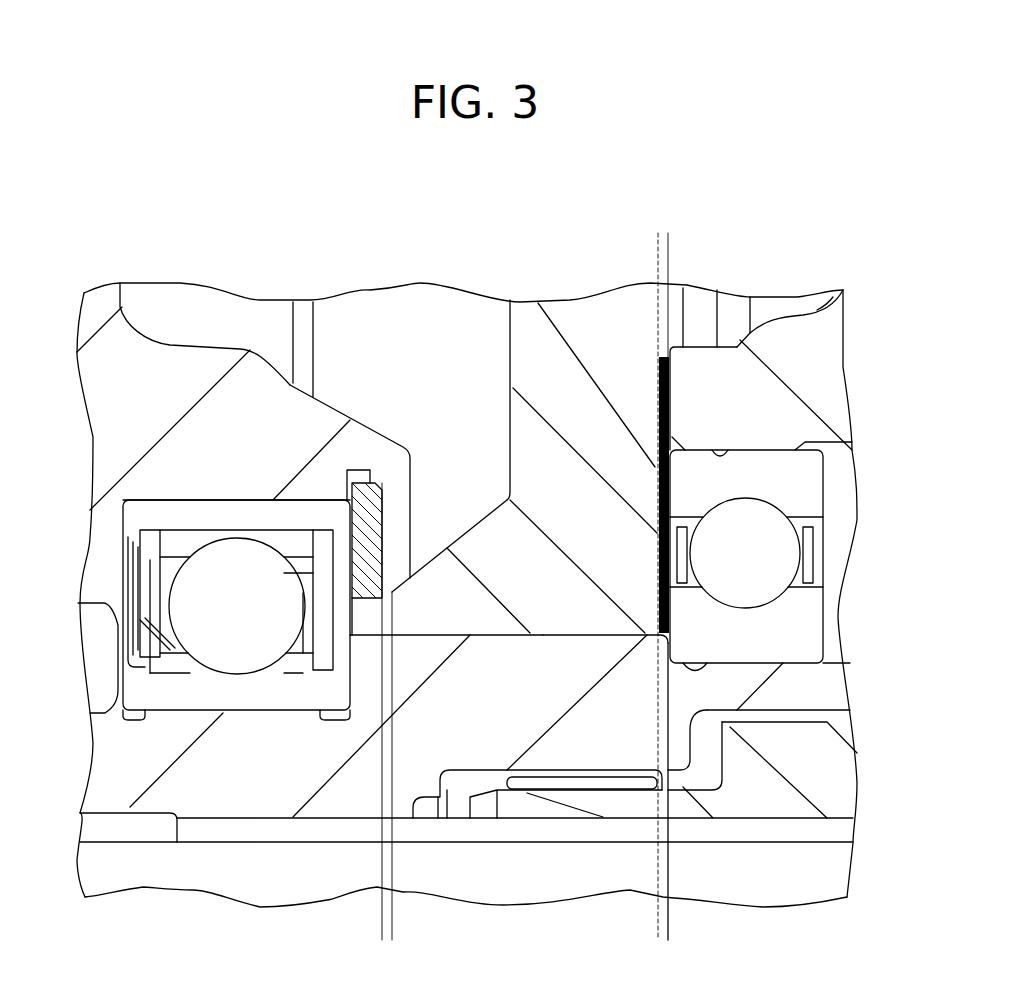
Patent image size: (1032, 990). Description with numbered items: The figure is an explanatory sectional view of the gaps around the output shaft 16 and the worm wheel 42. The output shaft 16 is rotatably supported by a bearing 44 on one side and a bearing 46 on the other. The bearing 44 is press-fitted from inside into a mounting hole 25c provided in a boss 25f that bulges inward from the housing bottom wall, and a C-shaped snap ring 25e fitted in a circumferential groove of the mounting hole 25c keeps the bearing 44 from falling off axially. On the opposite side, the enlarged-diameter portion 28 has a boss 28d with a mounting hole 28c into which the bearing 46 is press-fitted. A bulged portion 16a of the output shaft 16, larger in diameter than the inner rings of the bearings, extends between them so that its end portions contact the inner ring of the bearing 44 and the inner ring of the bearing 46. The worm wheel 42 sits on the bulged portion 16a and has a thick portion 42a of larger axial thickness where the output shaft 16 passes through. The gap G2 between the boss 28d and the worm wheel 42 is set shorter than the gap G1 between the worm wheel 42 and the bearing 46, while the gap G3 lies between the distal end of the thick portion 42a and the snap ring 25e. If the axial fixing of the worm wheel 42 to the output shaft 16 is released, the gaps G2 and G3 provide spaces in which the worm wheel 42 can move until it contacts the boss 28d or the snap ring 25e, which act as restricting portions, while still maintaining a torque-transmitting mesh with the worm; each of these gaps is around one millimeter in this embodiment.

The output shaft 16 is at (582, 655).
The bulged portion 16a is at (543, 633).
The mounting hole 25c is at (232, 503).
The snap ring 25e is at (373, 495).
The boss 25f is at (362, 437).
The enlarged-diameter portion 28 is at (800, 342).
The mounting hole 28c is at (720, 458).
The boss 28d is at (727, 360).
The worm wheel 42 is at (520, 352).
The thick portion 42a is at (432, 553).
The bearing 44 is at (262, 698).
The bearing 46 is at (768, 466).
The gap G1 is at (636, 937).
The gap G2 is at (636, 240).
The gap G3 is at (360, 937).